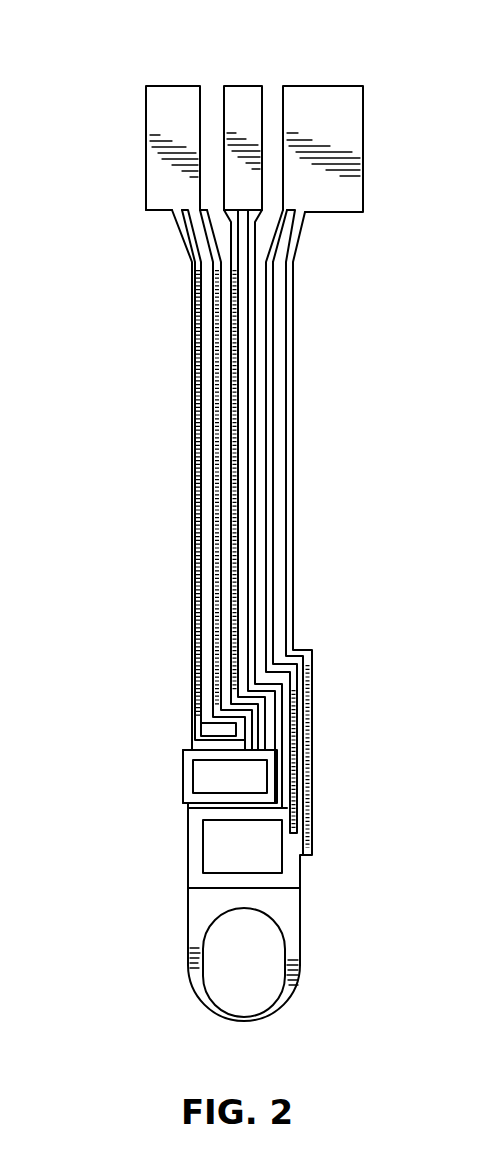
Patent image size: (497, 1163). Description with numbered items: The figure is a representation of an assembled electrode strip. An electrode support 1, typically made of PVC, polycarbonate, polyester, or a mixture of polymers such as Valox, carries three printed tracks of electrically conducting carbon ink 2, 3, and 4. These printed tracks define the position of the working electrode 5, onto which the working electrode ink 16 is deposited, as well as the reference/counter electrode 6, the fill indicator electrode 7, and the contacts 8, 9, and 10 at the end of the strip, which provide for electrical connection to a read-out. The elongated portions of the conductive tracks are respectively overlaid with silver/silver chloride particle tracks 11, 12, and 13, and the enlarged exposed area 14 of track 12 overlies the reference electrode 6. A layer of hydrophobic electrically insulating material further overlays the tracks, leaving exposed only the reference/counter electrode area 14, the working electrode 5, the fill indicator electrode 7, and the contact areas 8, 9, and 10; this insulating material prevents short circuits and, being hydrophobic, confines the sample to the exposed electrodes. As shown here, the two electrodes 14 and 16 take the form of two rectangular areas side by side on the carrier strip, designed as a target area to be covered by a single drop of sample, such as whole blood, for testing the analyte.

The electrode support 1 is at (293, 920).
The printed track of electrically conducting carbon ink 2 is at (192, 505).
The printed track of electrically conducting carbon ink 3 is at (264, 448).
The printed track of electrically conducting carbon ink 4 is at (299, 357).
The working electrode 5 is at (188, 872).
The reference/counter electrode 6 is at (188, 780).
The fill indicator electrode 7 is at (205, 728).
The contact 8 is at (170, 97).
The contact 9 is at (245, 105).
The contact 10 is at (327, 100).
The silver/silver chloride particle track 11 is at (203, 452).
The silver/silver chloride particle track 12 is at (247, 512).
The silver/silver chloride particle track 13 is at (287, 406).
The enlarged exposed area of track 14 is at (257, 777).
The working electrode ink 16 is at (212, 832).